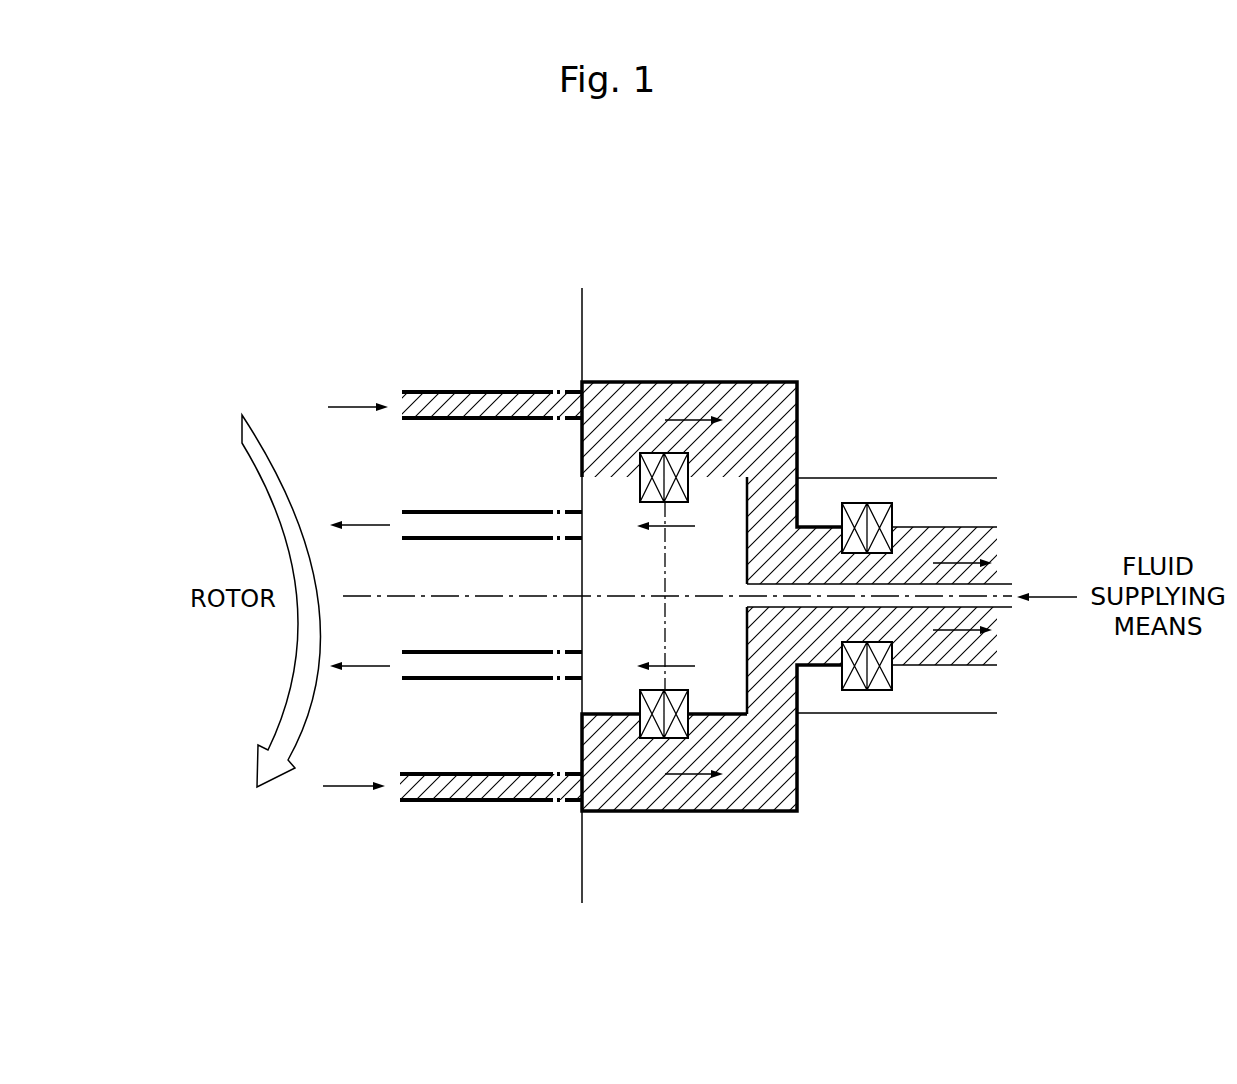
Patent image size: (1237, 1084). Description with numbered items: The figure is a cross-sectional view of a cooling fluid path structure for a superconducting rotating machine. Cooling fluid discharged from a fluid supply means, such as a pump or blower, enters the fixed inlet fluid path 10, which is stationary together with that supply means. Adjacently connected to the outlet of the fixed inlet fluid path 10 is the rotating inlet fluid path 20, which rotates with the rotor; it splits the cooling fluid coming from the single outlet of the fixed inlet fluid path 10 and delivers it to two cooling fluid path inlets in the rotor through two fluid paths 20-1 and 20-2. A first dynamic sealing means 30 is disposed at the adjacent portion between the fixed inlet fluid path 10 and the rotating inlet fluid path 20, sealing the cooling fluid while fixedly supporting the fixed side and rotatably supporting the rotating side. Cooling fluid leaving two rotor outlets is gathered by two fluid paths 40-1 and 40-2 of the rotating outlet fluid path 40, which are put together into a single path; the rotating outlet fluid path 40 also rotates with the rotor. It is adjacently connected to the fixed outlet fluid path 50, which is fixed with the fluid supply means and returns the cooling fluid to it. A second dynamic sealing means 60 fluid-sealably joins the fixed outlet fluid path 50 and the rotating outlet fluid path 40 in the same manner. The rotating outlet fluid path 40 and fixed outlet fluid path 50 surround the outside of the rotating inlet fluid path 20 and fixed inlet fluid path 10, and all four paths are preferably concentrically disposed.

The fixed inlet fluid path 10 is at (731, 692).
The rotating inlet fluid path 20 is at (613, 686).
The first dynamic sealing means 30 is at (677, 733).
The rotating outlet fluid path 40 is at (705, 400).
The fixed outlet fluid path 50 is at (958, 550).
The second dynamic sealing means 60 is at (848, 503).
The fluid path 40-1 is at (478, 408).
The fluid path 40-2 is at (495, 788).
The fluid path 20-1 is at (488, 527).
The fluid path 20-2 is at (496, 668).